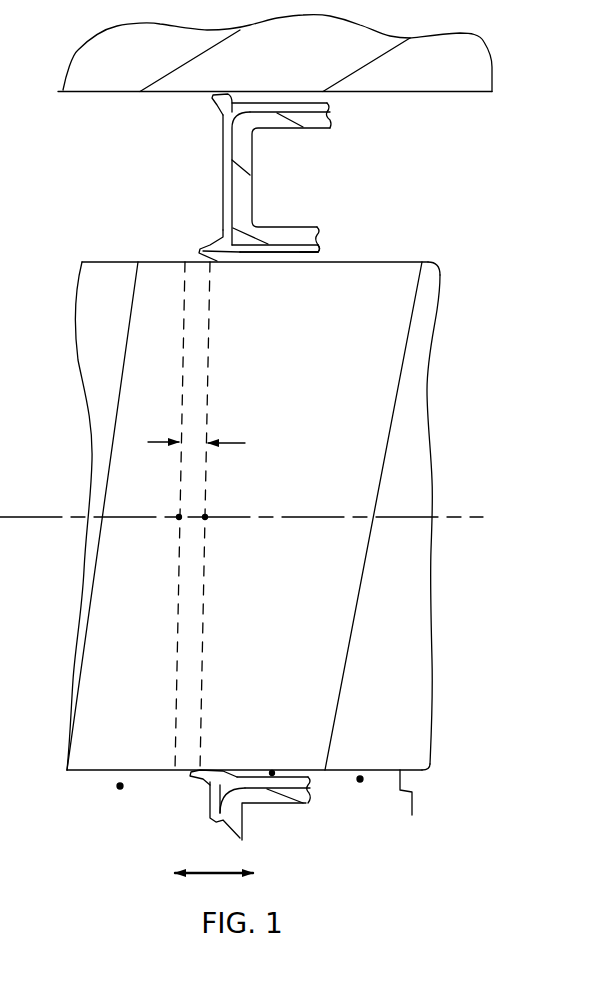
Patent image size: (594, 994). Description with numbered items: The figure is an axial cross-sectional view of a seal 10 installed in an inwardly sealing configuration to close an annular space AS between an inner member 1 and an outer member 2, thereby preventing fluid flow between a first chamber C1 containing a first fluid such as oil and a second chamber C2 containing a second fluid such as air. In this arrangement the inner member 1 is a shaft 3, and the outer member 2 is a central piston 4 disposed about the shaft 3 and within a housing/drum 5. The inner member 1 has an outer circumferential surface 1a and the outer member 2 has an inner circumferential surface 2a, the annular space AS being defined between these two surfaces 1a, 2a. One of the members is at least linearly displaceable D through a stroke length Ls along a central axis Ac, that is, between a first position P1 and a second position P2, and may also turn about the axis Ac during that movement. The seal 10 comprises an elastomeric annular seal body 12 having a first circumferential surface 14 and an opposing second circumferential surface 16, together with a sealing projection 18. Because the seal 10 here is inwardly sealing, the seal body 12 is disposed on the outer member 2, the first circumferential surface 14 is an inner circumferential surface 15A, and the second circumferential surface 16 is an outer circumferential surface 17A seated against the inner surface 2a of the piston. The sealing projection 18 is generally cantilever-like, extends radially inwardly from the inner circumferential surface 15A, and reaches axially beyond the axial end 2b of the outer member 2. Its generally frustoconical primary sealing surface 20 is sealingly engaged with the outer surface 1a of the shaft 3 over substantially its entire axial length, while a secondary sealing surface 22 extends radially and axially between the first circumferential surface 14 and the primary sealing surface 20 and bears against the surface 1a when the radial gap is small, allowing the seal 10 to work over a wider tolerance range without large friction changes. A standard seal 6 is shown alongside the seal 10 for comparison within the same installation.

The inner member 1 is at (415, 372).
The outer circumferential surface 1a is at (413, 807).
The outer member 2 is at (284, 802).
The inner circumferential surface 2a is at (292, 790).
The axial end 2b is at (217, 813).
The shaft 3 is at (377, 272).
The central piston 4 is at (248, 157).
The housing/drum 5 is at (403, 86).
The standard seal 6 is at (217, 102).
The seal 10 is at (176, 226).
The annular seal body 12 is at (257, 785).
The first circumferential surface 14 is at (277, 265).
The inner circumferential surface 15A is at (307, 261).
The second circumferential surface 16 is at (274, 238).
The outer circumferential surface 17A is at (300, 247).
The sealing projection 18 is at (223, 266).
The primary sealing surface 20 is at (211, 767).
The secondary sealing surface 22 is at (232, 772).
The annular space AS is at (272, 771).
The first chamber C1 is at (120, 789).
The second chamber C2 is at (360, 782).
The linear displacement D is at (207, 871).
The stroke length Ls is at (212, 447).
The first position P1 is at (205, 515).
The second position P2 is at (179, 515).
The central axis Ac is at (467, 514).